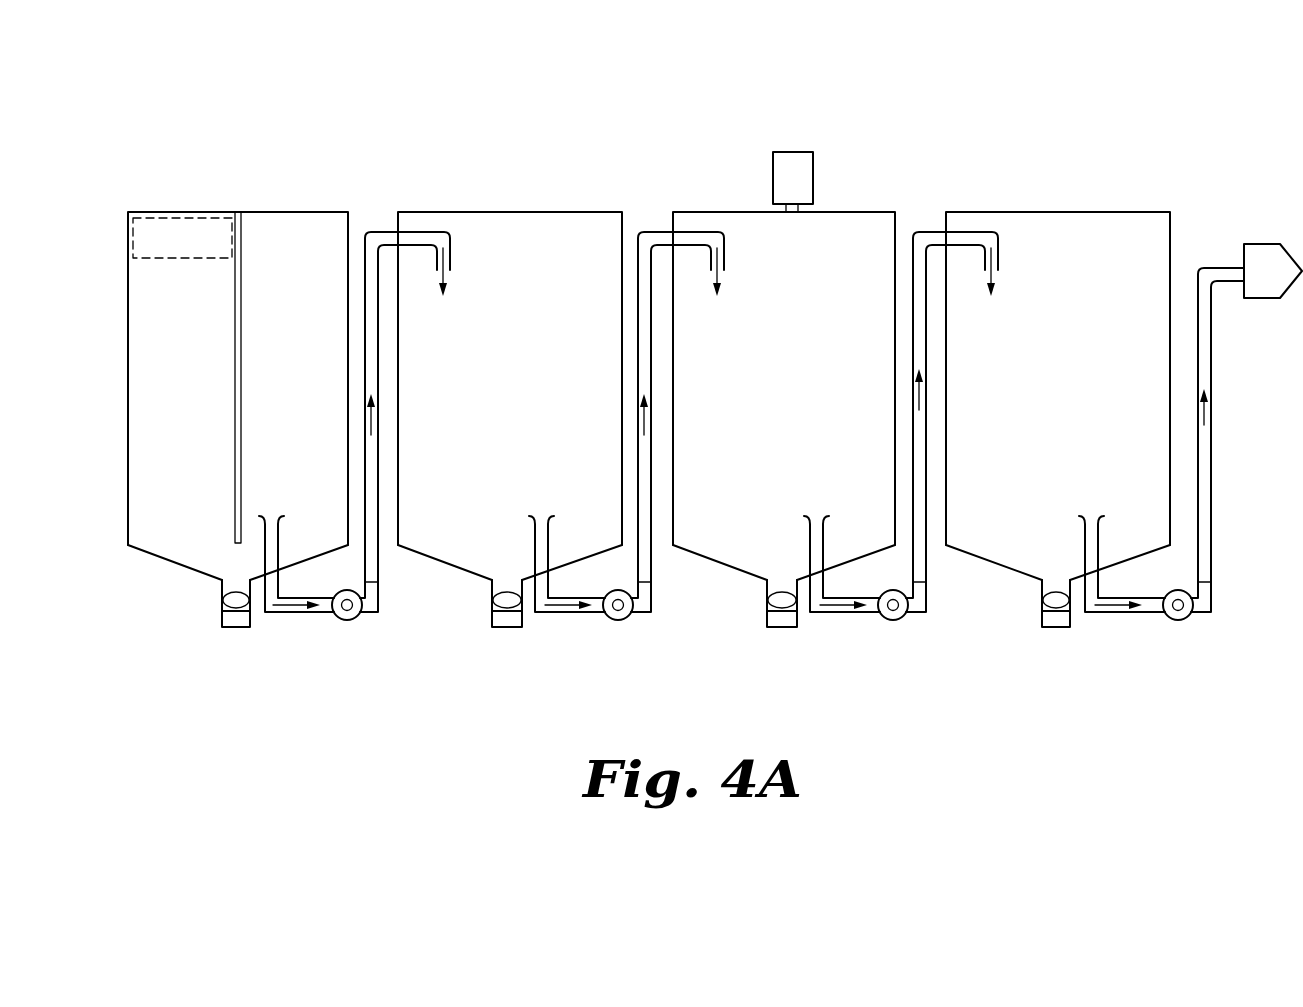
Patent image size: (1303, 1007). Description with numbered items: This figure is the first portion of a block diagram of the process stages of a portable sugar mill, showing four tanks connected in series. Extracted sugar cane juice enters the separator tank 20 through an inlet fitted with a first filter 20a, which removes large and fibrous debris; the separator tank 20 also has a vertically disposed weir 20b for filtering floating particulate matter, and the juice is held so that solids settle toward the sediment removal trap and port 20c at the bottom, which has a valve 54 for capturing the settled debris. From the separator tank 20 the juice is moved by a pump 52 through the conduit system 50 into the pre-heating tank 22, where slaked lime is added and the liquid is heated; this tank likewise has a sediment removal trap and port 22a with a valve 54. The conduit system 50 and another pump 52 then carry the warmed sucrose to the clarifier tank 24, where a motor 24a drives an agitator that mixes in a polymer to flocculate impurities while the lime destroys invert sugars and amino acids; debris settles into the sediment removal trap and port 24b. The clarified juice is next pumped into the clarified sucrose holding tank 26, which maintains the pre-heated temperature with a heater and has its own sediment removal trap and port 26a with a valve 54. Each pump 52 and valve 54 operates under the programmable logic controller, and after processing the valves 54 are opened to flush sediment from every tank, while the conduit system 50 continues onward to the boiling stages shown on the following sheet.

The separator tank 20 is at (280, 212).
The first filter 20a is at (137, 262).
The separator partition wall 20b is at (242, 322).
The sediment removal trap and port 20c is at (225, 566).
The pre-heating tank 22 is at (552, 212).
The sediment removal trap and port 22a is at (497, 566).
The clarifier tank 24 is at (825, 212).
The motor 24a is at (796, 152).
The sediment removal trap and port 24b is at (773, 566).
The clarified sucrose holding tank 26 is at (1100, 212).
The sediment removal trap and port 26a is at (1047, 566).
The conduit system 50 is at (380, 573).
The pump 52 is at (340, 619).
The valve 54 is at (222, 595).